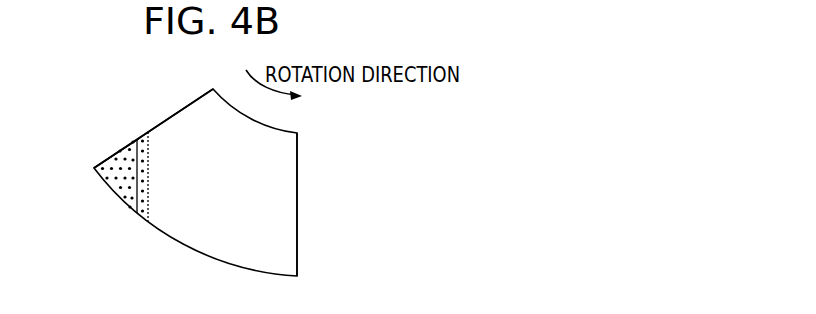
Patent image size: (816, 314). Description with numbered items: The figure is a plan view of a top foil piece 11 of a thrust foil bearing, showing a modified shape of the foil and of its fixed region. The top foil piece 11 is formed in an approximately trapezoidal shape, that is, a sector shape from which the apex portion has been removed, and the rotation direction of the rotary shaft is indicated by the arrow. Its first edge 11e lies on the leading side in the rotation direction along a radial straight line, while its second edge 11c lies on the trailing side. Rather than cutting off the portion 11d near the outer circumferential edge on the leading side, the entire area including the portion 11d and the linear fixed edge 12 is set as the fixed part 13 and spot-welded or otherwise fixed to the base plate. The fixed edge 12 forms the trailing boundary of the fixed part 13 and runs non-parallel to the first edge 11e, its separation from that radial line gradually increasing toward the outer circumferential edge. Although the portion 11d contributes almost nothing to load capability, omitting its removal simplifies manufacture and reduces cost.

The top foil piece 11 is at (306, 172).
The second edge 11c is at (298, 237).
The portion 11d is at (117, 157).
The first edge 11e is at (165, 122).
The fixed edge 12 is at (143, 190).
The fixed part 13 is at (117, 194).